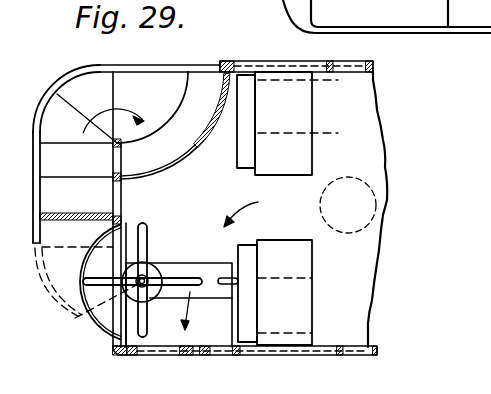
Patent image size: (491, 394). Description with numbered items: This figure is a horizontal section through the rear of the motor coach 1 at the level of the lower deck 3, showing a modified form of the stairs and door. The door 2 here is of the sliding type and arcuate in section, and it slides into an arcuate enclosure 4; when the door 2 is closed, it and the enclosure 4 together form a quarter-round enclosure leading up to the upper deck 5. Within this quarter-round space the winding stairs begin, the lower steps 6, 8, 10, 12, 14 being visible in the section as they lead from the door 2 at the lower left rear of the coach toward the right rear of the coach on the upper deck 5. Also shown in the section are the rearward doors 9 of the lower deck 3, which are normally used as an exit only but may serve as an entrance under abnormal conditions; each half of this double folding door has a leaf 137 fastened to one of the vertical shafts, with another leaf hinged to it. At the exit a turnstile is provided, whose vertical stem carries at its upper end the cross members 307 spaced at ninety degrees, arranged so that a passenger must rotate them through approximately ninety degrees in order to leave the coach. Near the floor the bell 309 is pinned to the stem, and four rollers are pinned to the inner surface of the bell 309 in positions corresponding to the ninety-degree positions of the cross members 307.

The motor coach 1 is at (390, 151).
The door 2 is at (167, 160).
The lower deck 3 is at (348, 222).
The arcuate enclosure 4 is at (213, 110).
The upper deck 5 is at (147, 240).
The step 6 is at (155, 87).
The step 8 is at (90, 90).
The doors 9 is at (207, 360).
The step 10 is at (58, 118).
The step 12 is at (63, 162).
The step 14 is at (67, 202).
The leaf 137 is at (197, 358).
The cross members 307 is at (112, 323).
The bell 309 is at (163, 265).